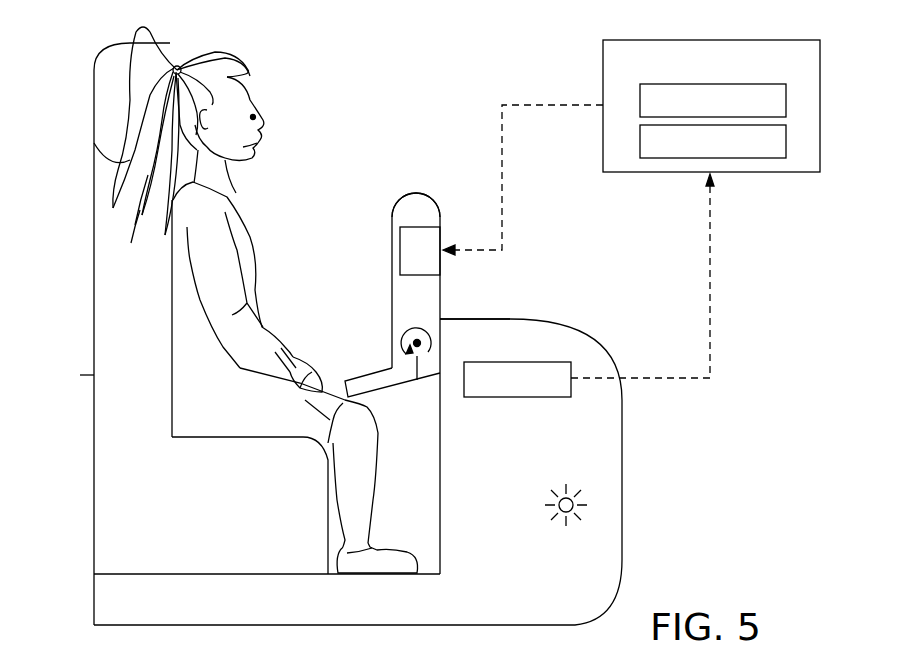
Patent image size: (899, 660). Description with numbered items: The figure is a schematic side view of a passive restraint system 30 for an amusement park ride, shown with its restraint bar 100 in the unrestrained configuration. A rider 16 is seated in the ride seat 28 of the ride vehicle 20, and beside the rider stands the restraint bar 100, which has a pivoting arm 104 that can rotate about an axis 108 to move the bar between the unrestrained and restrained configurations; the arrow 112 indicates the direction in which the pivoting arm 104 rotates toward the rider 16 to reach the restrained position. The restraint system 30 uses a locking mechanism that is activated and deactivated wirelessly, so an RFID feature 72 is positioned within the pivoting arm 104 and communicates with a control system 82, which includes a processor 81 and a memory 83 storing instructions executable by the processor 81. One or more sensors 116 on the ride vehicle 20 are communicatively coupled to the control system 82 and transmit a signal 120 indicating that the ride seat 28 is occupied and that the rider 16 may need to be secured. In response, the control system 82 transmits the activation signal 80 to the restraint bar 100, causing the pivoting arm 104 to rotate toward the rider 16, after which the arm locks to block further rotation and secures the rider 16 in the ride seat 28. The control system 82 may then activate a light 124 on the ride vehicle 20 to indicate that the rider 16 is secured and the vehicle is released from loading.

The rider 16 is at (222, 52).
The ride vehicle 20 is at (60, 210).
The ride seat 28 is at (94, 375).
The restraint system 30 is at (448, 316).
The RFID feature 72 is at (420, 275).
The activation signal 80 is at (552, 104).
The processor 81 is at (786, 98).
The control system 82 is at (712, 40).
The memory 83 is at (786, 138).
The restraint bar 100 is at (415, 192).
The pivoting arm 104 is at (417, 213).
The axis 108 is at (418, 378).
The arrow / direction 112 is at (412, 330).
The sensors 116 is at (518, 397).
The signal 120 is at (708, 300).
The light 124 is at (572, 512).